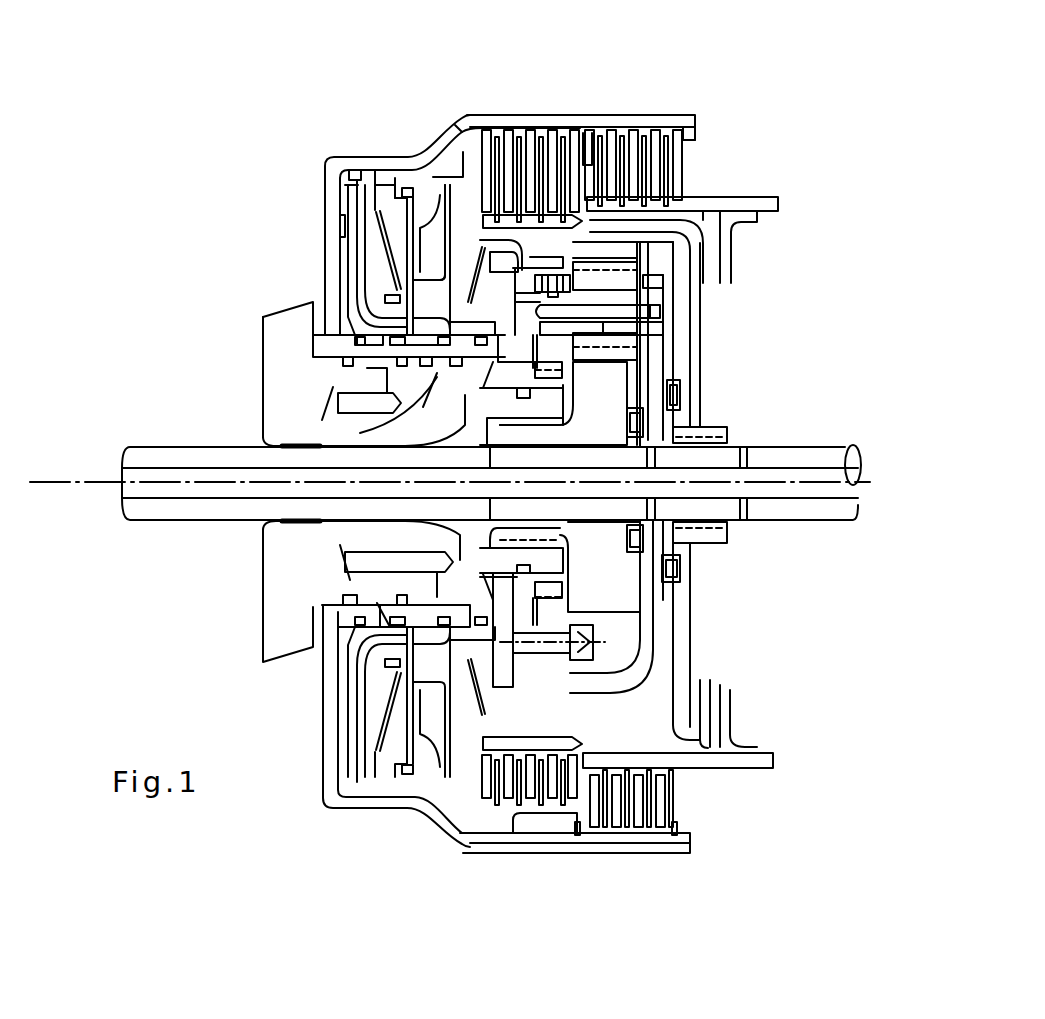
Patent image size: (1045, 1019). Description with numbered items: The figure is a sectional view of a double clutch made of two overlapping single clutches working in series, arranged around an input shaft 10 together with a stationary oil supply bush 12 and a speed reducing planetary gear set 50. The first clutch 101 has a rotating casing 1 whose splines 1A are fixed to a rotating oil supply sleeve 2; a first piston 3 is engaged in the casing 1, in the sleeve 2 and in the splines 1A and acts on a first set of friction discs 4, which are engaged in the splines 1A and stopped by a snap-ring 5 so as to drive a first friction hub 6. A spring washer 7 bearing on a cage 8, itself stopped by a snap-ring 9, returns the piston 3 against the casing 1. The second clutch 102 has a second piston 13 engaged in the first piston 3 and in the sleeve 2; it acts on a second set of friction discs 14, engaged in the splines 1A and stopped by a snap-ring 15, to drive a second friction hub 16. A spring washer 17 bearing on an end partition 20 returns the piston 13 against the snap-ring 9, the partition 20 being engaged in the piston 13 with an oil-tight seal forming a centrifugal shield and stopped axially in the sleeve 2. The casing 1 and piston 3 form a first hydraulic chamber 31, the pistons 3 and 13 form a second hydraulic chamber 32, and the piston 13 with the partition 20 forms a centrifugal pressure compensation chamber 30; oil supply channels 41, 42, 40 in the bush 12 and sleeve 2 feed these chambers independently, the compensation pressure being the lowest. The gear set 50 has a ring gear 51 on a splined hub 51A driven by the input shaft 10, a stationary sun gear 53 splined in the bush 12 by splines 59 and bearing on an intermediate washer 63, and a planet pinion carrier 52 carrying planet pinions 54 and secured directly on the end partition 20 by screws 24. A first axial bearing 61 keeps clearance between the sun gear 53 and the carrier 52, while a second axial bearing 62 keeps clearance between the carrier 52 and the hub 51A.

The rotating casing 1 is at (330, 280).
The splines 1A is at (462, 128).
The rotating oil supply sleeve 2 is at (330, 345).
The first piston 3 is at (350, 188).
The first set of friction discs 4 is at (620, 135).
The snap-ring 5 is at (695, 137).
The first friction hub 6 is at (730, 250).
The spring washer 7 is at (378, 683).
The cage 8 is at (386, 718).
The snap-ring 9 is at (400, 618).
The input shaft 10 is at (832, 440).
The stationary oil supply bush 12 is at (262, 328).
The second piston 13 is at (404, 190).
The second set of friction discs 14 is at (505, 132).
The snap-ring 15 is at (583, 135).
The second friction hub 16 is at (708, 263).
The spring washer 17 is at (442, 730).
The end partition 20 is at (541, 255).
The screws 24 is at (593, 648).
The centrifugal pressure compensation chamber 30 is at (435, 238).
The first hydraulic chamber 31 is at (340, 247).
The second hydraulic chamber 32 is at (380, 190).
The oil supply channel 40 is at (300, 440).
The oil supply channel 41 is at (320, 408).
The oil supply channel 42 is at (350, 565).
The speed reducing planetary gear set 50 is at (695, 648).
The ring gear 51 is at (612, 720).
The splined hub 51A is at (690, 540).
The planet pinion carrier 52 is at (665, 622).
The sun gear 53 is at (608, 578).
The planet pinions 54 is at (622, 345).
The splines 59 is at (563, 532).
The first axial bearing 61 is at (652, 428).
The second axial bearing 62 is at (672, 398).
The intermediate washer 63 is at (565, 413).
The first clutch 101 is at (692, 101).
The second clutch 102 is at (483, 101).